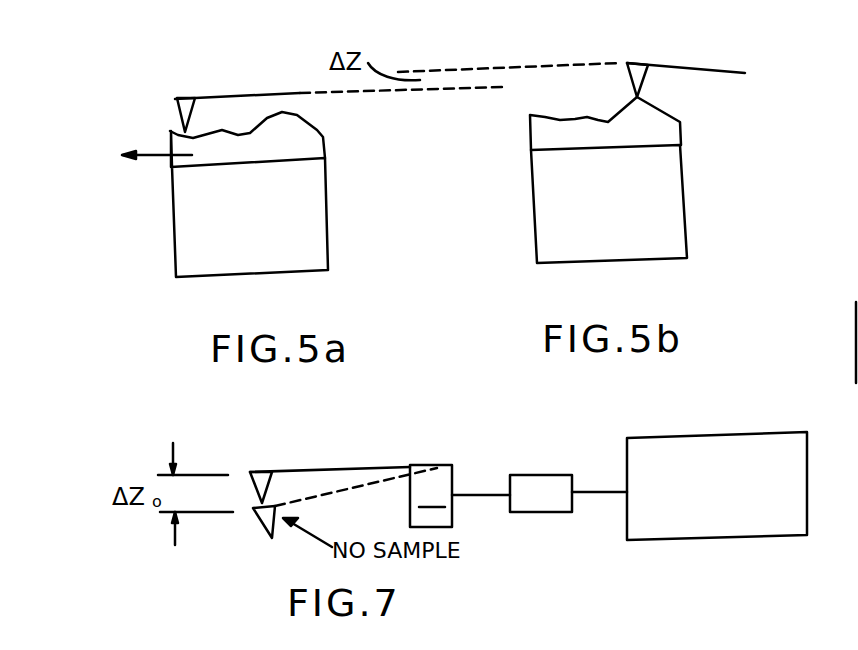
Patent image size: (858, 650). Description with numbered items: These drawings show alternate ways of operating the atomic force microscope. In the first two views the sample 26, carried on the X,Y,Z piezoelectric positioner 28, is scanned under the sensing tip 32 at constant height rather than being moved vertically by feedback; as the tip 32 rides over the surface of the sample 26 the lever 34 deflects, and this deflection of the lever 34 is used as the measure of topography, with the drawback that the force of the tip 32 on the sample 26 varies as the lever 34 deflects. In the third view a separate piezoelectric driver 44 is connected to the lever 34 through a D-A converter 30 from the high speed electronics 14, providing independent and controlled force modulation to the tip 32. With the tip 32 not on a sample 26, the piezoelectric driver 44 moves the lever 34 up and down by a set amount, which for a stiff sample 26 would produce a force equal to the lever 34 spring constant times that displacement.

In FIG. 7, the high speed programmable electronics 14 is at (707, 435).
In FIG. 5A, the sample 26 is at (172, 147).
In FIG. 5B, the sample 26 is at (658, 130).
In FIG. 5A, the X,Y,Z piezoelectric positioner 28 is at (172, 248).
In FIG. 5B, the X,Y,Z piezoelectric positioner 28 is at (530, 175).
In FIG. 7, the digital-to-analog (D-A) converter 30 is at (533, 475).
In FIG. 5A, the sensing tip 32 is at (179, 111).
In FIG. 5B, the sensing tip 32 is at (640, 78).
In FIG. 7, the sensing tip 32 is at (250, 485).
In FIG. 5A, the lever 34 is at (208, 99).
In FIG. 5B, the lever 34 is at (682, 65).
In FIG. 7, the lever 34 is at (287, 471).
In FIG. 7, the piezoelectric driver 44 is at (431, 496).